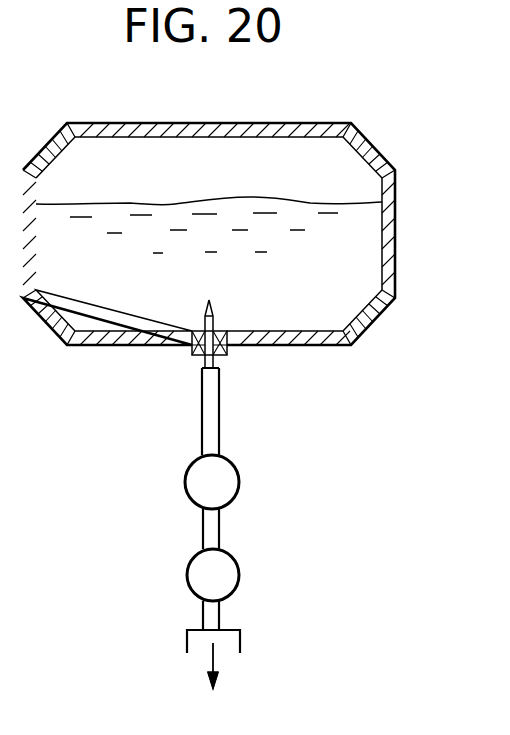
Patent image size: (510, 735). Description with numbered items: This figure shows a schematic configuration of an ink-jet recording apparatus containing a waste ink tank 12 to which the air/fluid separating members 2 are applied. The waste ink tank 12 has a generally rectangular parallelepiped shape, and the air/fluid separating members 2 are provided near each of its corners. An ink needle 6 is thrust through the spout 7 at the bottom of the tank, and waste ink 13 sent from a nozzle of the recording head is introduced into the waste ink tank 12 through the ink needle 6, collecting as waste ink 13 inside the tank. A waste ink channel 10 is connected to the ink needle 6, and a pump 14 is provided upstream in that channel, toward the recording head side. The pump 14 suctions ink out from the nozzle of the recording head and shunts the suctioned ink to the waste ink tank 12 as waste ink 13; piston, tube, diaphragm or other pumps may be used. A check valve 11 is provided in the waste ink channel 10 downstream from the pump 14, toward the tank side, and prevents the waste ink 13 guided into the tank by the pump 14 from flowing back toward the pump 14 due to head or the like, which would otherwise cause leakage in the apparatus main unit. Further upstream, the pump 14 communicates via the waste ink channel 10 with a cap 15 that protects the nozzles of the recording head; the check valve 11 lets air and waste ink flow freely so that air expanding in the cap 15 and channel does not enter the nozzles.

The air/fluid separating member 2 is at (374, 143).
The waste ink tank 12 is at (241, 122).
The waste ink 13 is at (338, 252).
The spout 7 is at (190, 352).
The ink needle 6 is at (225, 352).
The waste ink channel 10 is at (213, 612).
The check valve 11 is at (185, 482).
The pump 14 is at (187, 580).
The cap 15 is at (242, 640).